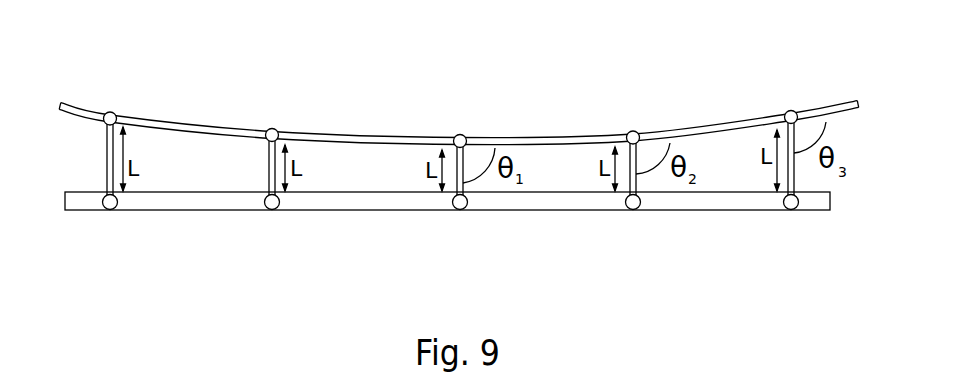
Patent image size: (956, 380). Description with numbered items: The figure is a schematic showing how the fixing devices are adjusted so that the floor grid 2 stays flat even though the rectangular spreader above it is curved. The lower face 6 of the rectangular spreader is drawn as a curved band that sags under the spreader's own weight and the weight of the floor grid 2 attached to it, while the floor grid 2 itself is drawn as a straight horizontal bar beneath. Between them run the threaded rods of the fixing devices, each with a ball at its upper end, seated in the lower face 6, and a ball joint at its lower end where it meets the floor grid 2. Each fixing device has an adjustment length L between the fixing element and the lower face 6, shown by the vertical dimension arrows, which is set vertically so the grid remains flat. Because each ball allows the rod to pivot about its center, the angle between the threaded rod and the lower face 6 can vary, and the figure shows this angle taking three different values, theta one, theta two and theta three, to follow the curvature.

The floor grid 2 is at (185, 210).
The lower face 6 is at (188, 123).